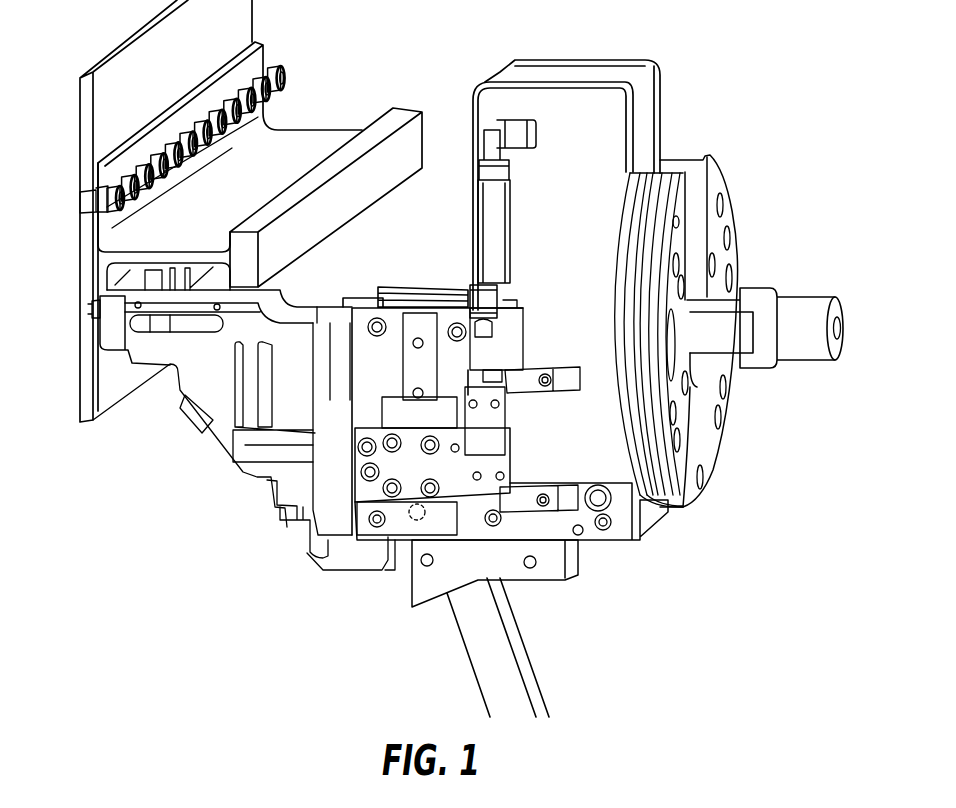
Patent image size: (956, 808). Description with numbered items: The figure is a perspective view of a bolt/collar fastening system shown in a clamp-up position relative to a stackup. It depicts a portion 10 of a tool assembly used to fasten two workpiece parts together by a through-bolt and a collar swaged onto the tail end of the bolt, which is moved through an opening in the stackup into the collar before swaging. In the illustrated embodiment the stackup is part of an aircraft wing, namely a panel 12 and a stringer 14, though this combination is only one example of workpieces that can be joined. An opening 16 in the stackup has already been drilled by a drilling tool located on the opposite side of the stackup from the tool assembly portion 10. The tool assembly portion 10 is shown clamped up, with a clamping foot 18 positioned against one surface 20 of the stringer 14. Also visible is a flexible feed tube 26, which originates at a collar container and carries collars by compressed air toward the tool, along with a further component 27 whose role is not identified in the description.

The portion of tool assembly 10 is at (265, 604).
The panel 12 is at (80, 118).
The stringer 14 is at (98, 173).
The opening 16 is at (88, 310).
The clamping foot 18 is at (116, 330).
The surface of stringer 20 is at (128, 286).
The flexible feed tube 26 is at (497, 653).
The pneumatic cylinder 27 is at (493, 228).